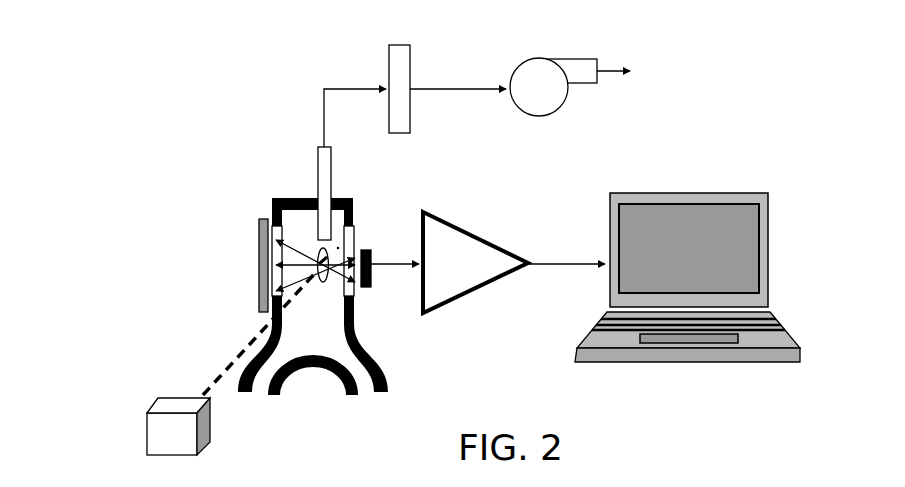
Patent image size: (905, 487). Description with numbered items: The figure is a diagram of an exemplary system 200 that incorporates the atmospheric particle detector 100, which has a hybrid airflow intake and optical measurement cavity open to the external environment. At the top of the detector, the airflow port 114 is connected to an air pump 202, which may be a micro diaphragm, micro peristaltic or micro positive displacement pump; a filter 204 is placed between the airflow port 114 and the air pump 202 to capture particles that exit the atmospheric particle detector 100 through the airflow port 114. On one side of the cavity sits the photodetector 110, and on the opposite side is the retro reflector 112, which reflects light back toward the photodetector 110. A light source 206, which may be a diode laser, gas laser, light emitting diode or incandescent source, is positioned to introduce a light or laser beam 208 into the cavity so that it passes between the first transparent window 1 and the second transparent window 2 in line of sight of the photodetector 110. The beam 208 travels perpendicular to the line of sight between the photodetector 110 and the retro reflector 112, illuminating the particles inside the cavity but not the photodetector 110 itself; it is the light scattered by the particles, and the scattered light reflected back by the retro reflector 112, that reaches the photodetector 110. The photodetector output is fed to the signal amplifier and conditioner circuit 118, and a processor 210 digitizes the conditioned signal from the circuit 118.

The system 200 is at (211, 57).
The atmospheric particle detector 100 is at (231, 199).
The first transparent window 1 is at (366, 218).
The second transparent window 2 is at (270, 228).
The retro reflector 112 is at (251, 297).
The airflow port 114 is at (331, 165).
The photodetector 110 is at (376, 242).
The filter 204 is at (447, 89).
The air pump 202 is at (570, 76).
The circuit 118 is at (488, 285).
The processor 210 is at (687, 294).
The light source 206 is at (147, 426).
The light or laser beam 208 is at (218, 389).